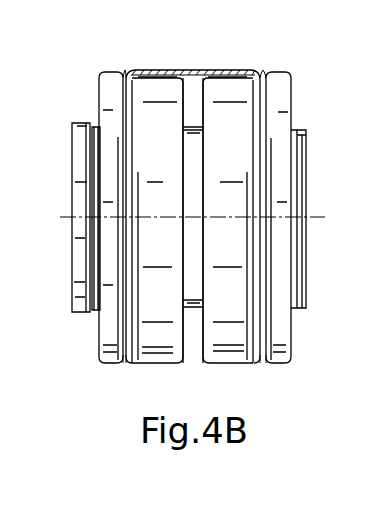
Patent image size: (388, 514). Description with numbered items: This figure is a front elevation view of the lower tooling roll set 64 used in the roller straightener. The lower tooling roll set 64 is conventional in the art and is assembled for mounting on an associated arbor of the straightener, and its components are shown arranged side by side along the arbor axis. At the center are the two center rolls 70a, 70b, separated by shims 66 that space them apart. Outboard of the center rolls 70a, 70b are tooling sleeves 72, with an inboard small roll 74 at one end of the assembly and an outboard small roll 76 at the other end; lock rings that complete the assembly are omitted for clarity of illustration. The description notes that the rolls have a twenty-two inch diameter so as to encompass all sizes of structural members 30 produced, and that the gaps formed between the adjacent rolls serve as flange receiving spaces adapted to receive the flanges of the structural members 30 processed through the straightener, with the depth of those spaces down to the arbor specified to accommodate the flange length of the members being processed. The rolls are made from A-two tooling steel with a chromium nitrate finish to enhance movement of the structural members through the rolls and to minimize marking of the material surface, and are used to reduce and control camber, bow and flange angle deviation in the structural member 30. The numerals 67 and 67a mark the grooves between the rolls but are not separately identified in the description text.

The structural member 30 is at (170, 70).
The lower tooling roll set 64 is at (305, 76).
The shims 66 is at (197, 330).
The right groove 67 is at (262, 366).
The left groove 67a is at (125, 363).
The center roll 70a is at (160, 347).
The center roll 70b is at (232, 352).
The tooling sleeve 72 is at (300, 130).
The inboard small roll 74 is at (108, 335).
The outboard small roll 76 is at (283, 337).